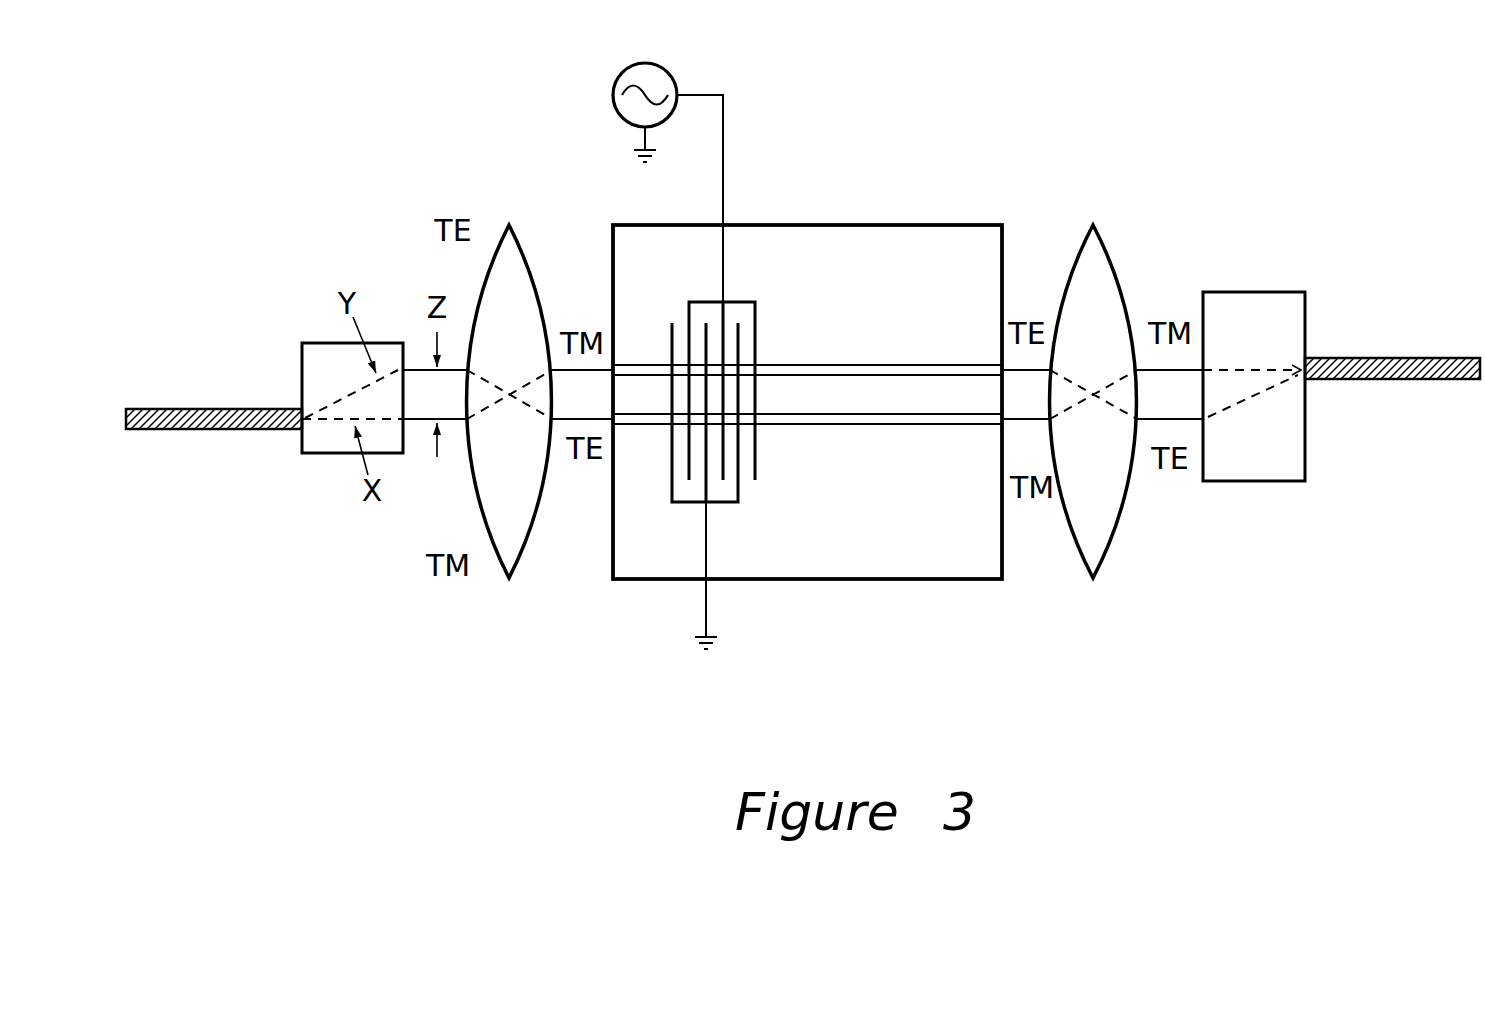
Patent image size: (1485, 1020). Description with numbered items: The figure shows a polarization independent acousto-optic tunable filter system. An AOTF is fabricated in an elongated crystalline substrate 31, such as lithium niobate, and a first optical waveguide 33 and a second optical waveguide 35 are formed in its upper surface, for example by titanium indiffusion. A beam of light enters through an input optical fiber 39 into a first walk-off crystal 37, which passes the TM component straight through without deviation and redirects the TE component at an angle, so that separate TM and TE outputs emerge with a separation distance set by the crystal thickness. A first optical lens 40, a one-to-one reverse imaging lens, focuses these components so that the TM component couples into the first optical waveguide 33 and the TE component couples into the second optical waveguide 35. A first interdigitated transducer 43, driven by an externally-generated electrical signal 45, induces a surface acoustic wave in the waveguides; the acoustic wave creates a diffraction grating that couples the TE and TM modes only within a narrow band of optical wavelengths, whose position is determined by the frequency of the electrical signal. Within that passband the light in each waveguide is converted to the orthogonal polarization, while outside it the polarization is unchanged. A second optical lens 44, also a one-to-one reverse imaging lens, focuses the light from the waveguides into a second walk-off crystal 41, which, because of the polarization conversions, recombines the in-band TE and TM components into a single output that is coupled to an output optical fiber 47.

The crystalline substrate 31 is at (935, 579).
The first optical waveguide 33 is at (852, 365).
The second optical waveguide 35 is at (868, 424).
The first walk-off crystal 37 is at (327, 357).
The input optical fiber 39 is at (180, 430).
The first optical lens 40 is at (512, 255).
The second walk-off crystal 41 is at (1253, 462).
The first interdigitated transducer 43 is at (733, 312).
The second optical lens 44 is at (1098, 273).
The externally-generated electrical signal 45 is at (618, 73).
The output optical fiber 47 is at (1398, 358).